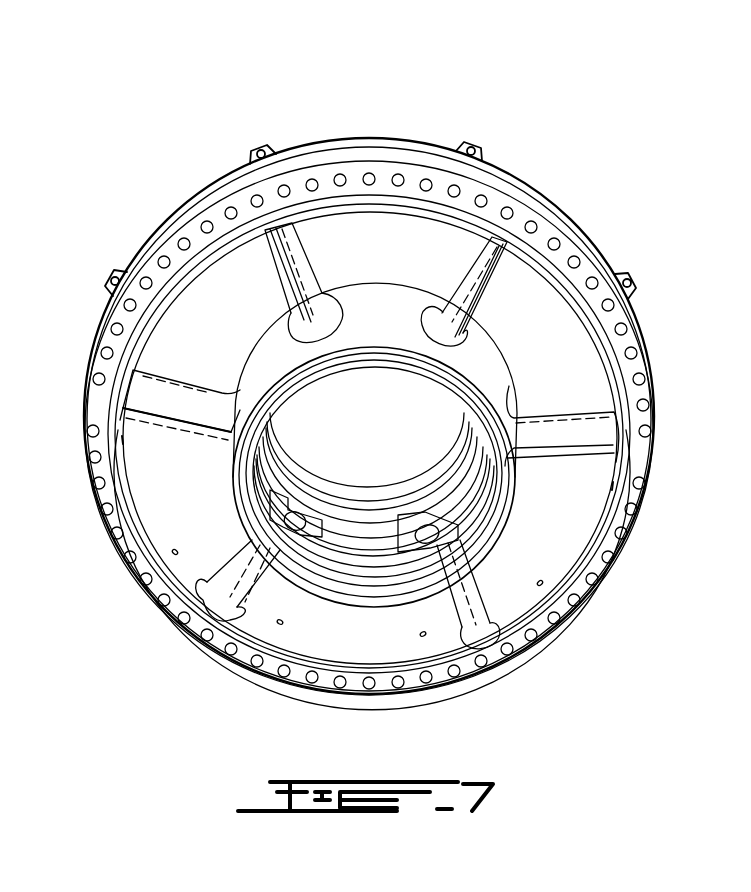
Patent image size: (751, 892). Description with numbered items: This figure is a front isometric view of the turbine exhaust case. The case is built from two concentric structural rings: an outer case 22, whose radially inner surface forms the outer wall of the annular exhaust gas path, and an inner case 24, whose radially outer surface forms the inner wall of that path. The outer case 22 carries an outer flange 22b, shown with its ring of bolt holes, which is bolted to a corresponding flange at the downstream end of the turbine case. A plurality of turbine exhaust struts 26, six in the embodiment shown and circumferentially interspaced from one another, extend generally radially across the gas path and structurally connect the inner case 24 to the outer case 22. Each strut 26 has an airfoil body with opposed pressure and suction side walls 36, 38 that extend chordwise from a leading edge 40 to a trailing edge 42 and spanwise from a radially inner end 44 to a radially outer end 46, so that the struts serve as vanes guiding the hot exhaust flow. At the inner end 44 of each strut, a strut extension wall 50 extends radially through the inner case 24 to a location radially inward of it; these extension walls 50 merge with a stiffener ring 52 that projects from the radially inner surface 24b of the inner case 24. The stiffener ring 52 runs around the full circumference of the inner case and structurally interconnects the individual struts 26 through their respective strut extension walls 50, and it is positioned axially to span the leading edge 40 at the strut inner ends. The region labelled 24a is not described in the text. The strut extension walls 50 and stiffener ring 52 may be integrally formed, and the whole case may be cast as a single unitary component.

The outer case 22 is at (150, 530).
The outer flange 22b is at (648, 462).
The inner case 24 is at (375, 312).
The hub front portion 24a is at (354, 330).
The radially inner surface of the inner case 24b is at (352, 545).
The turbine exhaust struts 26 is at (490, 306).
The pressure side wall 36 is at (478, 276).
The suction side wall 38 is at (478, 292).
The leading edge 40 is at (283, 263).
The trailing edge 42 is at (612, 398).
The radially inner end 44 is at (228, 405).
The radially outer end 46 is at (208, 593).
The strut extension wall 50 is at (413, 528).
The stiffener ring 52 is at (382, 560).